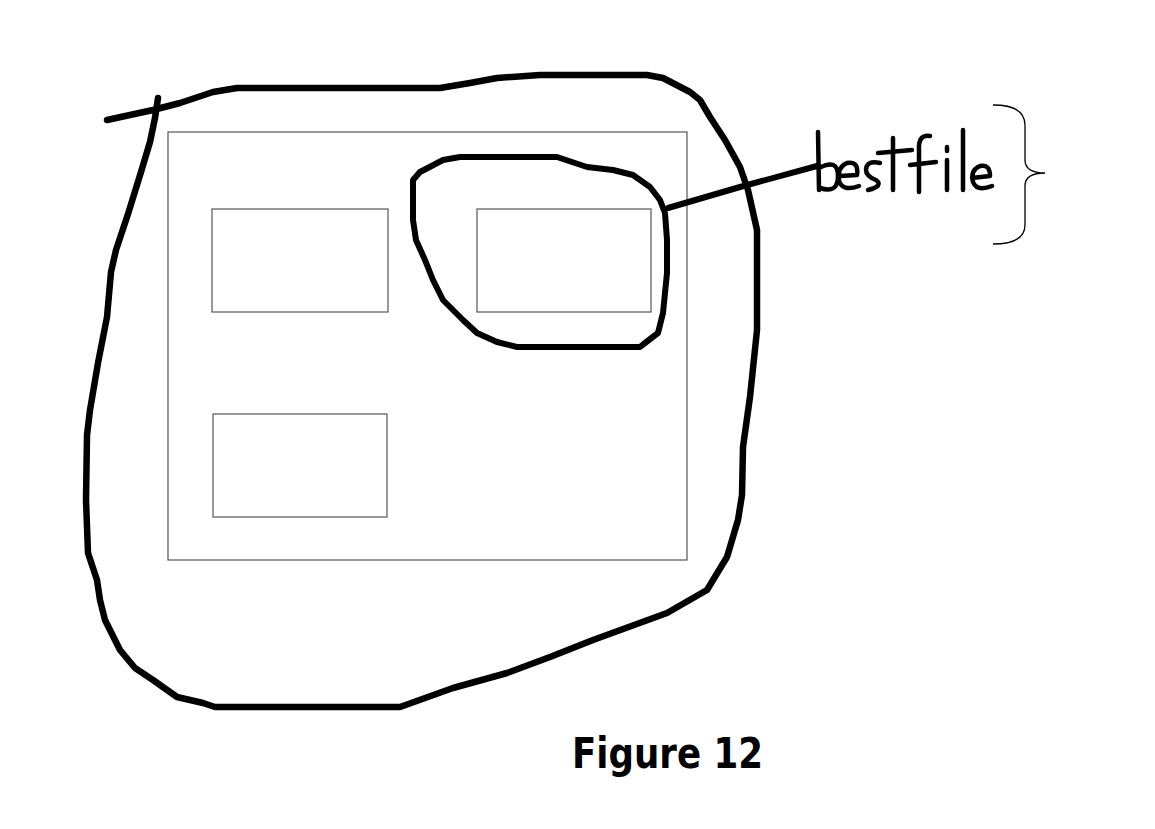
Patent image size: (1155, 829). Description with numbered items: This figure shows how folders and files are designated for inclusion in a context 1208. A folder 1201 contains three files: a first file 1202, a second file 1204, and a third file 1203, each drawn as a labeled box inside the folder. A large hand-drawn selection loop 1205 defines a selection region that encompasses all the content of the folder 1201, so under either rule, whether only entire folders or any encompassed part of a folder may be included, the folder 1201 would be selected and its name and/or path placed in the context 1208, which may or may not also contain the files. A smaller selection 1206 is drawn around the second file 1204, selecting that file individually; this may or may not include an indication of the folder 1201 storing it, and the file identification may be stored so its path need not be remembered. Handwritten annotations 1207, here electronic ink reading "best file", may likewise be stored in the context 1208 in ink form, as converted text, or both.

The folder 1201 is at (303, 560).
The file 1 1202 is at (300, 312).
The file 3 1203 is at (387, 465).
The file 2 1204 is at (563, 312).
The selection loop 1205 is at (743, 498).
The selection 1206 is at (618, 168).
The annotations 1207 is at (908, 174).
The context 1208 is at (780, 615).